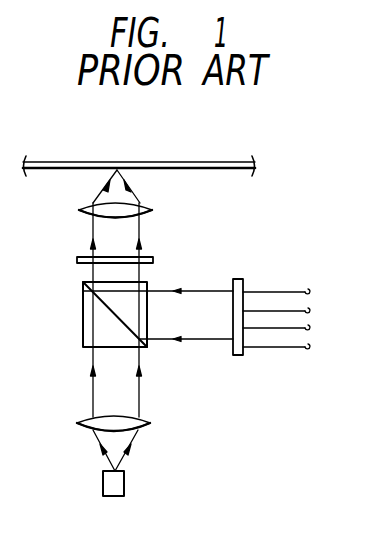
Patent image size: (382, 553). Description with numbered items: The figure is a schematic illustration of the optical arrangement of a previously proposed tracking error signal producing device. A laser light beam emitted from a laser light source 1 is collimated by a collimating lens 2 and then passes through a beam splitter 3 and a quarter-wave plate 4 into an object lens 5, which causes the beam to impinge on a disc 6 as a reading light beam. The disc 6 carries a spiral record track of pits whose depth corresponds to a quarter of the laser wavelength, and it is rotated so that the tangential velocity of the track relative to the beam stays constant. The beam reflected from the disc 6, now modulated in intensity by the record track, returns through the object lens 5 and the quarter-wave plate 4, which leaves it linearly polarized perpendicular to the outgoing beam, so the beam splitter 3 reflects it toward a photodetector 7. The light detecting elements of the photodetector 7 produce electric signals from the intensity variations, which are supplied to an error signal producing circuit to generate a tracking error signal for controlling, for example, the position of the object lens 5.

The laser light source 1 is at (124, 483).
The collimating lens 2 is at (150, 421).
The beam splitter 3 is at (83, 318).
The quarter-wave plate 4 is at (152, 257).
The object lens 5 is at (149, 206).
The disc 6 is at (220, 170).
The photodetector 7 is at (236, 278).